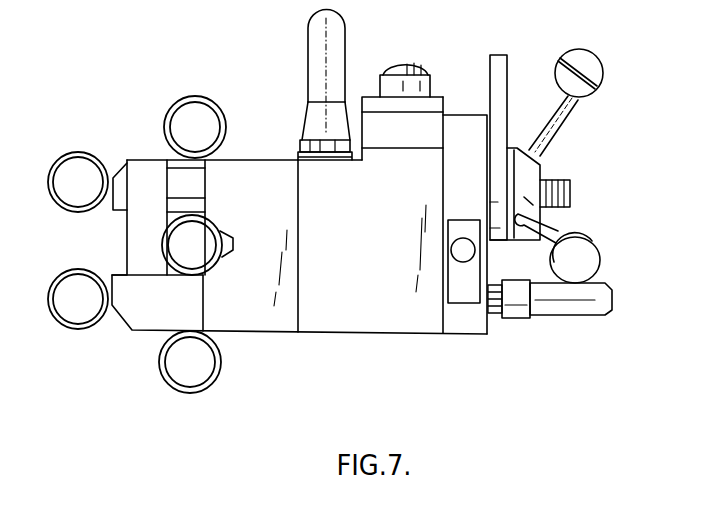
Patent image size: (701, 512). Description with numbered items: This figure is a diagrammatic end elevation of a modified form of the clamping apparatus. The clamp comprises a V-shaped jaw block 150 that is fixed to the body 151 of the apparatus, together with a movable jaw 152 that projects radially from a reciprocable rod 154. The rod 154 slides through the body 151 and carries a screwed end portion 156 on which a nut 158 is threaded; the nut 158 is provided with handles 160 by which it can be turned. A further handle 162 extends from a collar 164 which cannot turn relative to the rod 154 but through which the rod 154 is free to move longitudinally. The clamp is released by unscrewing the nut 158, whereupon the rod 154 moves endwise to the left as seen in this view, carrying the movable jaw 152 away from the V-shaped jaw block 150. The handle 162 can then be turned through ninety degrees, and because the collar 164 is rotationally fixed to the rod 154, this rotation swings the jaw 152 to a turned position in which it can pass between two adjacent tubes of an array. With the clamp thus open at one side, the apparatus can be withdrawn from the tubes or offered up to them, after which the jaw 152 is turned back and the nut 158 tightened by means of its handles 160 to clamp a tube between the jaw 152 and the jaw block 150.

The V-shaped jaw block 150 is at (263, 178).
The body 151 is at (299, 198).
The movable jaw 152 is at (138, 192).
The reciprocable rod 154 is at (182, 187).
The screwed end portion 156 is at (568, 198).
The nut 158 is at (590, 238).
The handles 160 is at (592, 72).
The handle 162 is at (500, 78).
The collar 164 is at (500, 243).